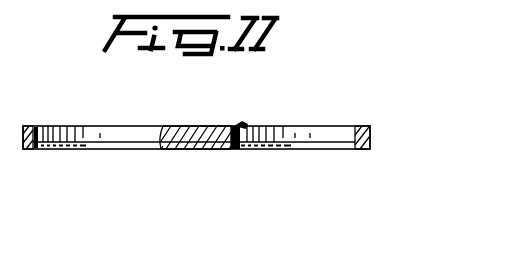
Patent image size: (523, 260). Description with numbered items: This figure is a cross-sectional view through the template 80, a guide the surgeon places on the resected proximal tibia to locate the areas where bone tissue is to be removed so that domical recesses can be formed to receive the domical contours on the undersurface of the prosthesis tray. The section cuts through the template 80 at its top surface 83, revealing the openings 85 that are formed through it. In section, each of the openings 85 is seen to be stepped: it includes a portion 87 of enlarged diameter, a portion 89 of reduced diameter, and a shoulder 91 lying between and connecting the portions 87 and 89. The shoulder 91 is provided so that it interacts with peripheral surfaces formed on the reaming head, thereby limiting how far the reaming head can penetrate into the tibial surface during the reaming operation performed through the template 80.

The template 80 is at (313, 73).
The top surface 83 is at (193, 127).
The openings 85 is at (242, 124).
The portion of enlarged diameter 87 is at (44, 127).
The portion of reduced diameter 89 is at (156, 147).
The shoulder 91 is at (162, 126).